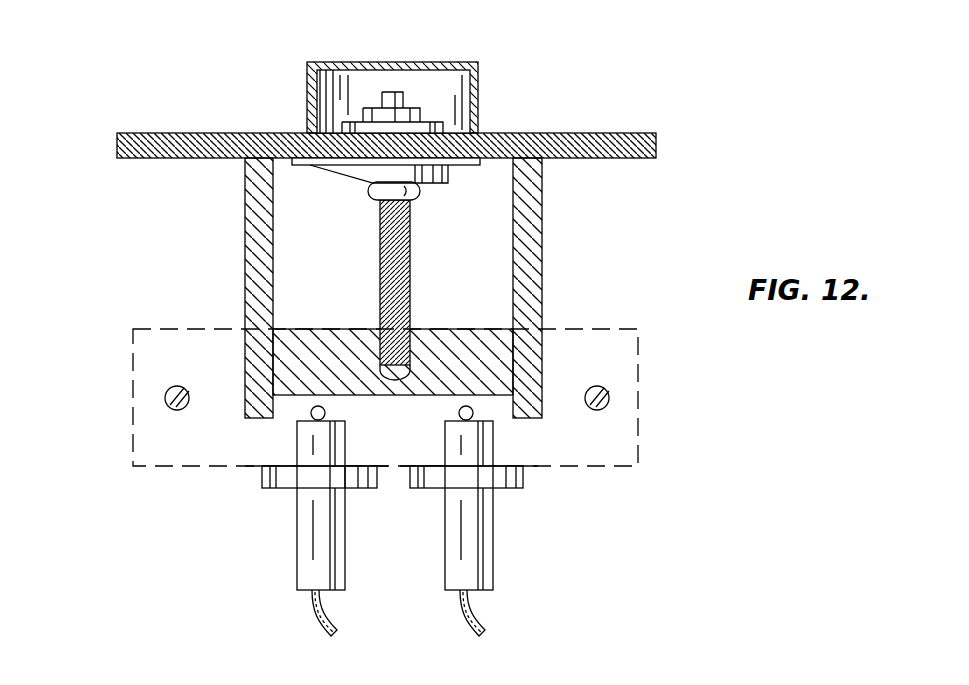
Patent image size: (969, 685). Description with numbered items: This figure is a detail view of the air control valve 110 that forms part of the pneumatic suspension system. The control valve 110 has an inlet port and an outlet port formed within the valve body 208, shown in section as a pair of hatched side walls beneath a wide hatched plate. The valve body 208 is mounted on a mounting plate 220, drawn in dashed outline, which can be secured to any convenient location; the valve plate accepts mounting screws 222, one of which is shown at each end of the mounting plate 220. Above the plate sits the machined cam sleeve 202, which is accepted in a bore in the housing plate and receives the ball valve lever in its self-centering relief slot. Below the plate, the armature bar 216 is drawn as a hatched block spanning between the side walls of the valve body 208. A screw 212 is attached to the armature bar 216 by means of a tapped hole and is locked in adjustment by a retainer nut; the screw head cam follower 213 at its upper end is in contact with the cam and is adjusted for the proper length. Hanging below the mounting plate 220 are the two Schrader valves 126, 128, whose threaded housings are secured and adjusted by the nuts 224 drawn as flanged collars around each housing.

The control valve 110 is at (582, 90).
The cam sleeve 202 is at (335, 62).
The valve body 208 is at (244, 237).
The screw 212 is at (380, 256).
The screw head cam follower 213 is at (418, 192).
The armature bar 216 is at (358, 342).
The mounting plate 220 is at (133, 366).
The mounting screws 222 is at (608, 393).
The nuts 224 is at (527, 475).
The Schrader valve 126 is at (297, 535).
The Schrader valve 128 is at (493, 558).